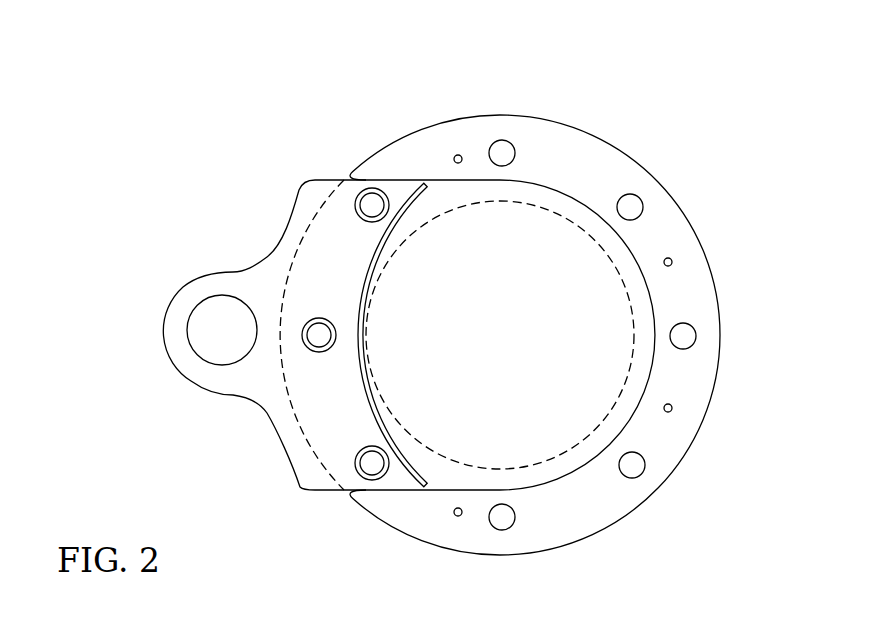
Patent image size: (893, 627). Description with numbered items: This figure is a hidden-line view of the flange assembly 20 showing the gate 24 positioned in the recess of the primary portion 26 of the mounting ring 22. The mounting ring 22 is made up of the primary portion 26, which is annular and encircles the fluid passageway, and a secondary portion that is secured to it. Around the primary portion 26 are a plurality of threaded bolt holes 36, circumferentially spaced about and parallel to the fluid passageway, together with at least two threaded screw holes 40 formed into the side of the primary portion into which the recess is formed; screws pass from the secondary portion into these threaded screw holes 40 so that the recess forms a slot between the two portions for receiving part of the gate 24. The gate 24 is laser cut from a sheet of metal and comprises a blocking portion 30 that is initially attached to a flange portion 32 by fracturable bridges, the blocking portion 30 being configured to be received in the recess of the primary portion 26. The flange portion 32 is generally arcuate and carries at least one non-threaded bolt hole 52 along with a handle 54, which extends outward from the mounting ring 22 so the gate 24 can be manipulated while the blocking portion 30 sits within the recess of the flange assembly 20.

The flange assembly 20 is at (548, 86).
The mounting ring 22 is at (583, 158).
The gate 24 is at (262, 387).
The primary portion 26 is at (672, 230).
The blocking portion 30 is at (582, 330).
The flange portion 32 is at (283, 253).
The threaded bolt holes 36 is at (502, 151).
The threaded screw holes 40 is at (457, 156).
The non-threaded bolt hole 52 is at (358, 220).
The handle 54 is at (175, 323).